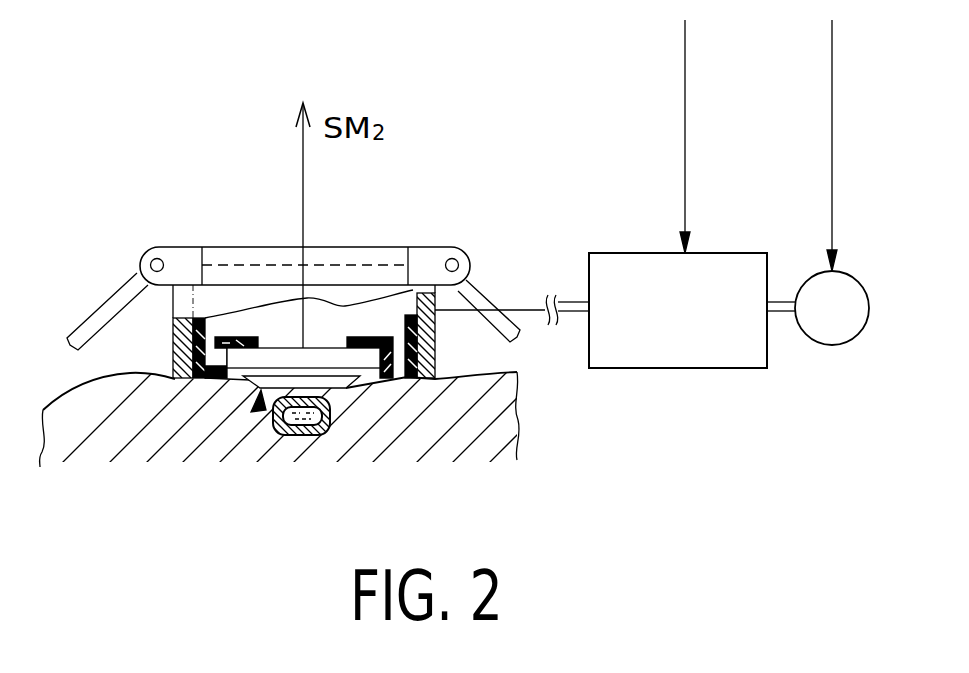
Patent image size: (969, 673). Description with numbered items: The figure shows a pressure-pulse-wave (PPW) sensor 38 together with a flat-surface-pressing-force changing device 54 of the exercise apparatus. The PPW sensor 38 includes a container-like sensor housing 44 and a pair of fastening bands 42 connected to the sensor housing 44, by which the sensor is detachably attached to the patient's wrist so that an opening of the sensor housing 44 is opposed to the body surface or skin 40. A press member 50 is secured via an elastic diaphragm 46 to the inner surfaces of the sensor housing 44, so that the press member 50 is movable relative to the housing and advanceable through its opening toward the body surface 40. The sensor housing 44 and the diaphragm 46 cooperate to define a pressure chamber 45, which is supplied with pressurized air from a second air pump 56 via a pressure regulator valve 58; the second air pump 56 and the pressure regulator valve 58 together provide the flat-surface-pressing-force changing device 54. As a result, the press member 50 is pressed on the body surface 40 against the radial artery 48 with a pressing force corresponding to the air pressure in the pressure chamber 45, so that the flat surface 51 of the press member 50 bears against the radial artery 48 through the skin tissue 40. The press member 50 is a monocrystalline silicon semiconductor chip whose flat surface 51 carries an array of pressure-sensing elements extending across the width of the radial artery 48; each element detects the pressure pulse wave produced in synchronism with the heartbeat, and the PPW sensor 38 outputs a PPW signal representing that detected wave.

The pressure-pulse-wave (PPW) sensor 38 is at (173, 222).
The body surface 40 is at (67, 394).
The fastening bands 42 is at (103, 312).
The sensor housing 44 is at (173, 349).
The pressure chamber 45 is at (334, 317).
The elastic diaphragm 46 is at (197, 380).
The radial artery 48 is at (306, 436).
The press member 50 is at (258, 412).
The flat surface 51 is at (330, 388).
The flat-surface-pressing-force changing device 54 is at (652, 307).
The second air pump 56 is at (830, 347).
The pressure regulator valve 58 is at (678, 369).